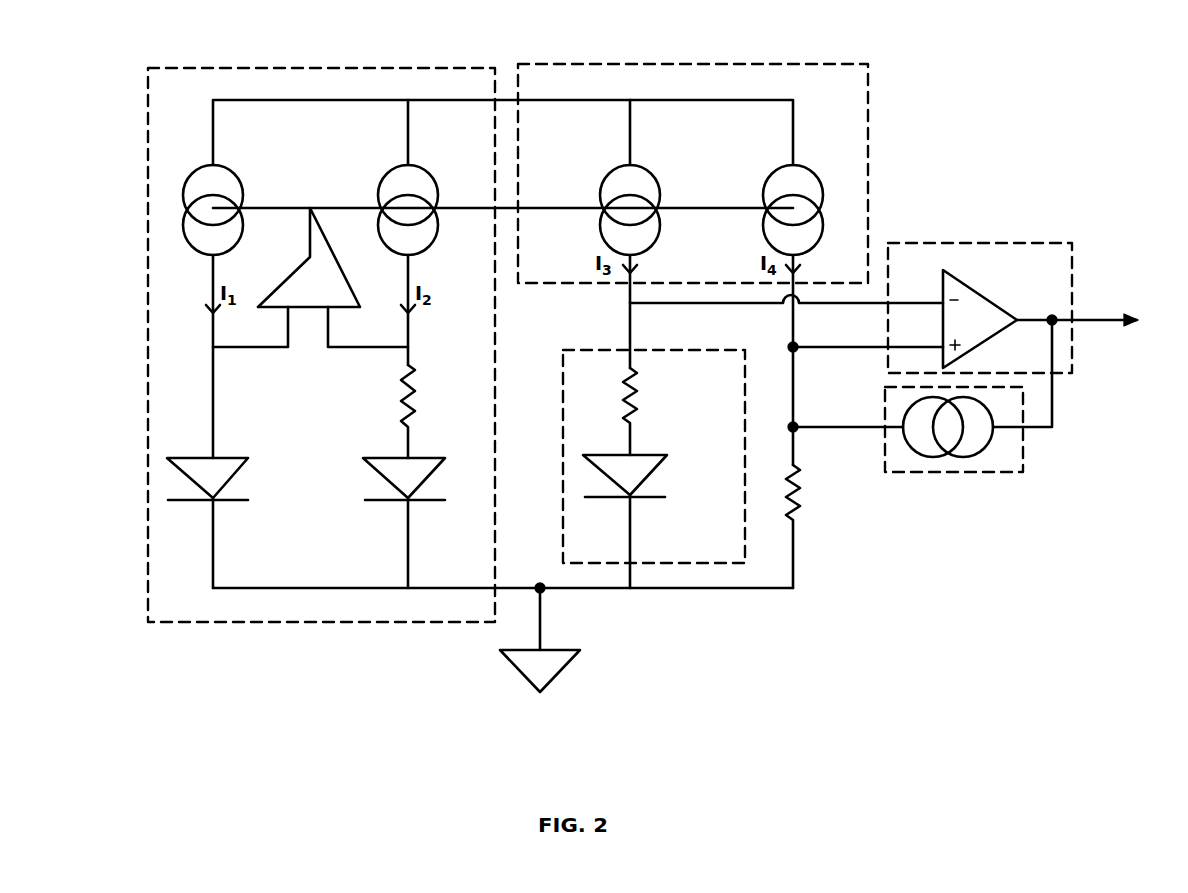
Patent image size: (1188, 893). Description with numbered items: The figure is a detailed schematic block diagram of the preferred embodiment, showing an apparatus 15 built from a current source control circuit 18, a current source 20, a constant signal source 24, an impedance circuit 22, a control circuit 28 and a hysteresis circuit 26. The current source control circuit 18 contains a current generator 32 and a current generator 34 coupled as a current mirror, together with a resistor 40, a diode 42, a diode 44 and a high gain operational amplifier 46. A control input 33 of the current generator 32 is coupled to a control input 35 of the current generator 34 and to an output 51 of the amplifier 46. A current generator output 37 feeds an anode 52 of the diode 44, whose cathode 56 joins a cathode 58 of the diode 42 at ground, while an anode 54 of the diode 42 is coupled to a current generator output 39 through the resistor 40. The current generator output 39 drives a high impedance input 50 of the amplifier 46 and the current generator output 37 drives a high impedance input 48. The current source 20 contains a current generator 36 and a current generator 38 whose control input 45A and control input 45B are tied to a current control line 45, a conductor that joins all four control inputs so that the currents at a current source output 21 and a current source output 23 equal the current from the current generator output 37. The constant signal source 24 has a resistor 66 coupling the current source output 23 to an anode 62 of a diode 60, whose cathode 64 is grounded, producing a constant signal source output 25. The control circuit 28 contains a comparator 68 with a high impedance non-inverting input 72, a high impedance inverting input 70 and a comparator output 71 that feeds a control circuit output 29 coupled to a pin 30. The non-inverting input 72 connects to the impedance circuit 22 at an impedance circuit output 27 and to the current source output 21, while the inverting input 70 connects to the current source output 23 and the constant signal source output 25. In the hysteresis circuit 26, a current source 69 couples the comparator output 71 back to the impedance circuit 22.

The apparatus 15 is at (984, 104).
The current source control circuit 18 is at (147, 272).
The current source 20 is at (728, 63).
The current source output 21 is at (798, 255).
The impedance circuit 22 is at (795, 490).
The current source output 23 is at (635, 255).
The constant signal source 24 is at (580, 350).
The constant signal source output 25 is at (635, 345).
The hysteresis circuit 26 is at (950, 472).
The impedance circuit output 27 is at (793, 427).
The control circuit 28 is at (1005, 243).
The control circuit output 29 is at (1078, 318).
The pin 30 is at (1150, 315).
The current generator 32 is at (245, 182).
The control input 33 is at (245, 207).
The current generator 34 is at (438, 182).
The control input 35 is at (378, 205).
The current generator 36 is at (660, 180).
The current generator output 37 is at (208, 262).
The current generator 38 is at (823, 180).
The current generator output 39 is at (410, 252).
The resistor 40 is at (410, 385).
The diode 42 is at (382, 501).
The diode 44 is at (180, 501).
The current control line 45 is at (600, 207).
The control input 45A is at (600, 210).
The control input 45B is at (768, 212).
The amplifier 46 is at (310, 277).
The input 48 is at (288, 315).
The input 50 is at (330, 318).
The output 51 is at (310, 262).
The anode 52 is at (213, 455).
The anode 54 is at (408, 455).
The cathode 56 is at (213, 505).
The cathode 58 is at (400, 505).
The diode 60 is at (642, 501).
The anode 62 is at (630, 455).
The cathode 64 is at (625, 541).
The resistor 66 is at (635, 390).
The comparator 68 is at (958, 314).
The current source 69 is at (990, 445).
The inverting input 70 is at (943, 298).
The comparator output 71 is at (1035, 312).
The non-inverting input 72 is at (943, 338).